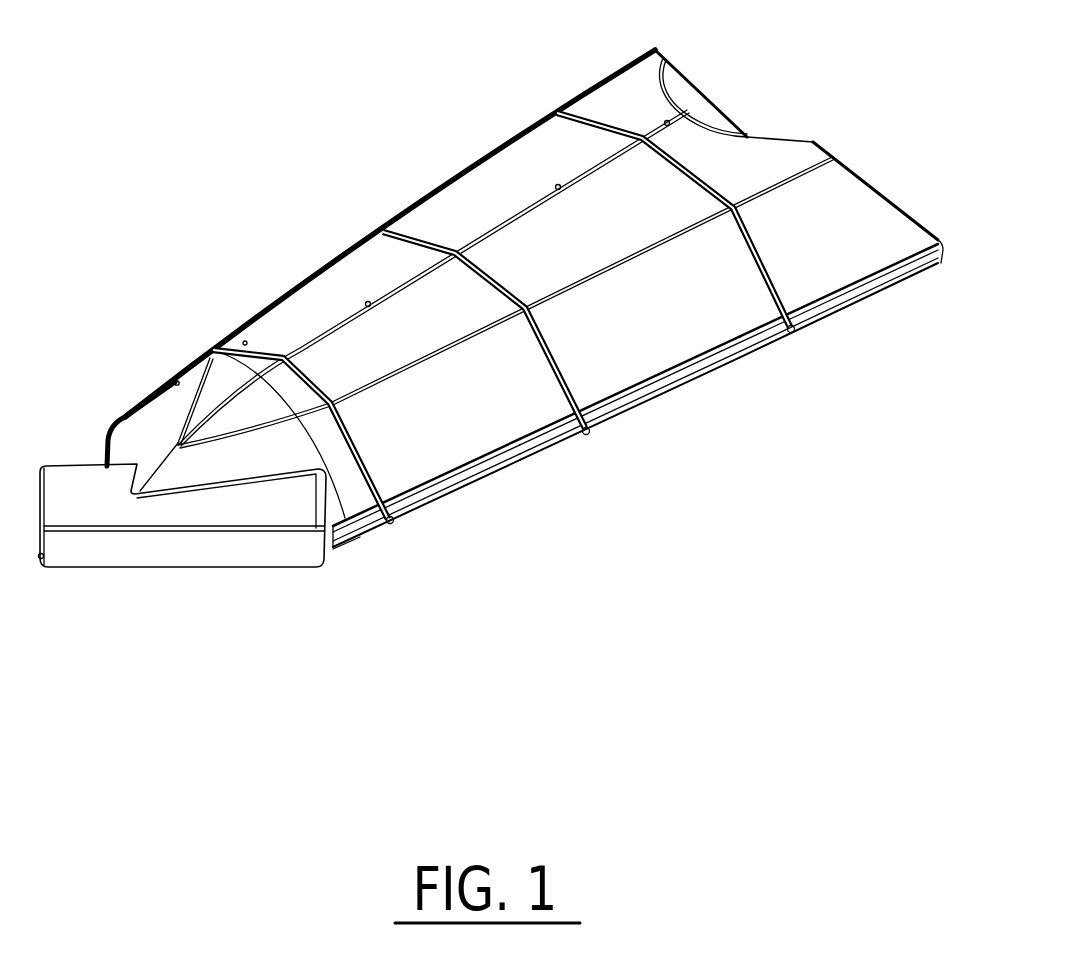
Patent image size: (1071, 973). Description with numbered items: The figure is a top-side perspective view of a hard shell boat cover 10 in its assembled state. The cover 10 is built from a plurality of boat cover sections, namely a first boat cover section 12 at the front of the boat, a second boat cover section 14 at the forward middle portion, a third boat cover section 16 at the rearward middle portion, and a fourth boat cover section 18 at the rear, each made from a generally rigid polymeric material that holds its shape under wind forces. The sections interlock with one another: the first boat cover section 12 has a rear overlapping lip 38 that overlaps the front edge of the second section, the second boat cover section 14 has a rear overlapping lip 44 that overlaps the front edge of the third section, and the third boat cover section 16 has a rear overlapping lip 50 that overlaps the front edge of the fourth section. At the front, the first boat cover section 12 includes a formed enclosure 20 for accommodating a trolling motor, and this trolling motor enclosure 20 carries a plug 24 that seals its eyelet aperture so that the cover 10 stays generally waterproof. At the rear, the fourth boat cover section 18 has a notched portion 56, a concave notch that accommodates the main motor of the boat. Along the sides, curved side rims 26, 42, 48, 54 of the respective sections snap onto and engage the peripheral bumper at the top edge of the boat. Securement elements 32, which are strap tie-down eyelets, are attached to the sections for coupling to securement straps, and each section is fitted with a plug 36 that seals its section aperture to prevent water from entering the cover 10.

The hard shell boat cover 10 is at (698, 442).
The first boat cover section 12 is at (160, 410).
The second boat cover section 14 is at (320, 297).
The third boat cover section 16 is at (457, 203).
The fourth boat cover section 18 is at (617, 93).
The formed enclosure 20 is at (210, 513).
The plug 24 is at (37, 560).
The curved side rim 26 is at (370, 522).
The securement elements 32 is at (395, 521).
The plug 36 is at (558, 187).
The rear overlapping lip 38 is at (353, 437).
The curved side rim 42 is at (492, 472).
The rear overlapping lip 44 is at (502, 292).
The curved side rim 48 is at (690, 383).
The rear overlapping lip 50 is at (712, 192).
The curved side rim 54 is at (873, 287).
The notched portion 56 is at (687, 93).